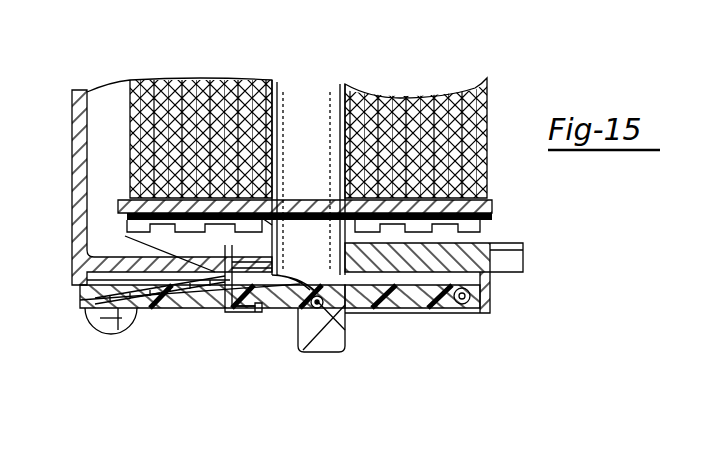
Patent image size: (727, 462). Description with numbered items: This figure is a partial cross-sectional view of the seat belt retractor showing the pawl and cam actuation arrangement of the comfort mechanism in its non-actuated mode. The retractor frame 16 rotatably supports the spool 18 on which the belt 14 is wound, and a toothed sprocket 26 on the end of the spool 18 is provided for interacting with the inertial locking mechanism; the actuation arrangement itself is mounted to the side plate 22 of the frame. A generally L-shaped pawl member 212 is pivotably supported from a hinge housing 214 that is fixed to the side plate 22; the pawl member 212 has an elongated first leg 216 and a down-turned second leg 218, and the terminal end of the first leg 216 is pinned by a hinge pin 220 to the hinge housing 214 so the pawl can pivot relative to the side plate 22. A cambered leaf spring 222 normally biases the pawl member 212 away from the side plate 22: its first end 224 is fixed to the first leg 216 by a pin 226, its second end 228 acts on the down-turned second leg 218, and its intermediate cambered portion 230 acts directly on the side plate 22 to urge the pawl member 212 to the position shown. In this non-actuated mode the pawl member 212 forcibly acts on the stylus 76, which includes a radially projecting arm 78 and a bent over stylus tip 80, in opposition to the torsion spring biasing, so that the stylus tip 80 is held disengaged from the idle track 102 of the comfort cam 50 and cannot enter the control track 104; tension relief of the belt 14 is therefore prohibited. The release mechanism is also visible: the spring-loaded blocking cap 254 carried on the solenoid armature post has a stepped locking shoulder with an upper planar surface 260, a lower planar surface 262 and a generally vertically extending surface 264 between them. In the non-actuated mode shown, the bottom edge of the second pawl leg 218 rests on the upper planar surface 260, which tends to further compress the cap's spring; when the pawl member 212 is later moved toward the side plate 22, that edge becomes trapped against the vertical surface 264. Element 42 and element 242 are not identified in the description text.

The belt 14 is at (487, 108).
The retractor frame 16 is at (72, 160).
The spool 18 is at (402, 95).
The side plate 22 is at (524, 255).
The toothed sprocket 26 is at (497, 204).
The channel 42 is at (318, 137).
The comfort cam 50 is at (494, 217).
The stylus 76 is at (264, 318).
The radially projecting arm 78 is at (233, 314).
The stylus tip 80 is at (224, 252).
The idle track 102 is at (265, 222).
The control track 104 is at (250, 246).
The pawl member 212 is at (186, 316).
The hinge housing 214 is at (492, 297).
The first leg 216 is at (416, 306).
The second leg 218 is at (90, 320).
The hinge pin 220 is at (464, 305).
The cambered leaf spring 222 is at (150, 318).
The first end 224 is at (296, 316).
The pin 226 is at (345, 330).
The second end 228 is at (112, 303).
The intermediate cambered portion 230 is at (125, 236).
The block 242 is at (323, 342).
The blocking cap 254 is at (108, 326).
The upper planar surface 260 is at (118, 332).
The lower planar surface 262 is at (100, 282).
The vertically extending surface 264 is at (115, 297).